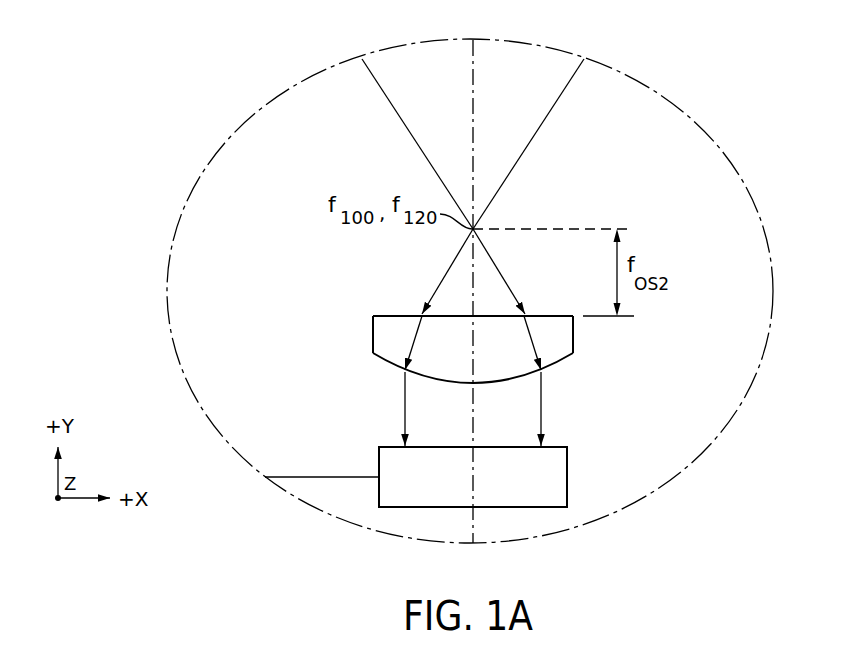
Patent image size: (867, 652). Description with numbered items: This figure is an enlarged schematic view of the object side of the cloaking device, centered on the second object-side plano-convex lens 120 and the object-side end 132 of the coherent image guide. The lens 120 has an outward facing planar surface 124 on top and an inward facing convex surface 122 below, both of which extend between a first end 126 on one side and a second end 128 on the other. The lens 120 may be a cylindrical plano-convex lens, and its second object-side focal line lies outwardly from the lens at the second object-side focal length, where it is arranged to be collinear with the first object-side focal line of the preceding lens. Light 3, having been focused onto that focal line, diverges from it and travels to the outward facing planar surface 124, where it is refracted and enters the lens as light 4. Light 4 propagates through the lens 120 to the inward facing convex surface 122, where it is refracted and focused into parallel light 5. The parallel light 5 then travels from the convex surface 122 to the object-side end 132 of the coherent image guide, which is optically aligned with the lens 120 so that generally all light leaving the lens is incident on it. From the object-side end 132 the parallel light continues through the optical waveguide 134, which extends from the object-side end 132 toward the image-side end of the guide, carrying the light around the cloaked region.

The light 3 is at (405, 126).
The light 4 is at (415, 330).
The parallel light 5 is at (405, 395).
The second object-side plano-convex lens 120 is at (484, 354).
The inward facing convex surface 122 is at (382, 360).
The outward facing planar surface 124 is at (388, 316).
The first end 126 is at (573, 340).
The second end 128 is at (372, 337).
The object-side end 132 is at (567, 477).
The optical waveguide 134 is at (316, 477).